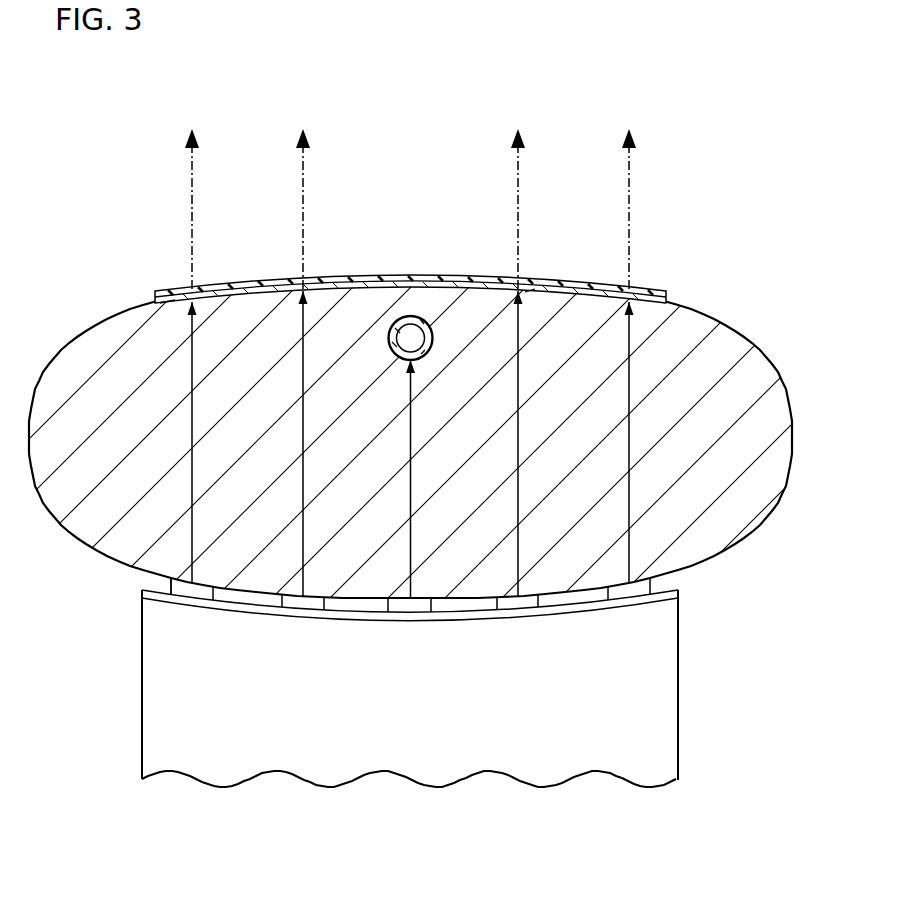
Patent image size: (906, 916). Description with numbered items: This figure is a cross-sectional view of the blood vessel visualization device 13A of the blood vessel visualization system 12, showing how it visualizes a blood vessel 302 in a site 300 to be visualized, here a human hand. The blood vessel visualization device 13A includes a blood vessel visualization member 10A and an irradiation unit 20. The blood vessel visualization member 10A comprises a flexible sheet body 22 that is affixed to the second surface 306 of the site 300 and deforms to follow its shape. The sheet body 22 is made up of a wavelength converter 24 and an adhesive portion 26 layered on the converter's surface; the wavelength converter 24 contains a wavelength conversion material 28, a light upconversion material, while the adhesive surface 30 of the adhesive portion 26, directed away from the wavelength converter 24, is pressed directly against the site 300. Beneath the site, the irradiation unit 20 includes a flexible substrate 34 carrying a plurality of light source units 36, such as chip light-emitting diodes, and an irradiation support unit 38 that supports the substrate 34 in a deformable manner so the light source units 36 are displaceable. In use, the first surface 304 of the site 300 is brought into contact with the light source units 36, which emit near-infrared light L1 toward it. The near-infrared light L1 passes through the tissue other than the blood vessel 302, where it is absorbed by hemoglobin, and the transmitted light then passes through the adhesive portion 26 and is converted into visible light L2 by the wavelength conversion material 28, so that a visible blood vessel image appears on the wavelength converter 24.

The blood vessel visualization device 13A is at (131, 80).
The blood vessel visualization system 12 is at (165, 80).
The blood vessel visualization member 10A is at (162, 259).
The site to be visualized 300 is at (749, 374).
The blood vessel 302 is at (421, 317).
The near-infrared light L1 is at (629, 540).
The visible light L2 is at (190, 164).
The sheet body 22 is at (741, 207).
The wavelength converter 24 is at (634, 290).
The wavelength conversion material 28 is at (458, 249).
The adhesive portion 26 is at (636, 304).
The adhesive surface 30 is at (250, 300).
The second surface 306 is at (532, 282).
The irradiation unit 20 is at (122, 687).
The irradiation support unit 38 is at (660, 693).
The substrate 34 is at (666, 588).
The first surface 304 is at (585, 600).
The light source units 36 is at (185, 594).